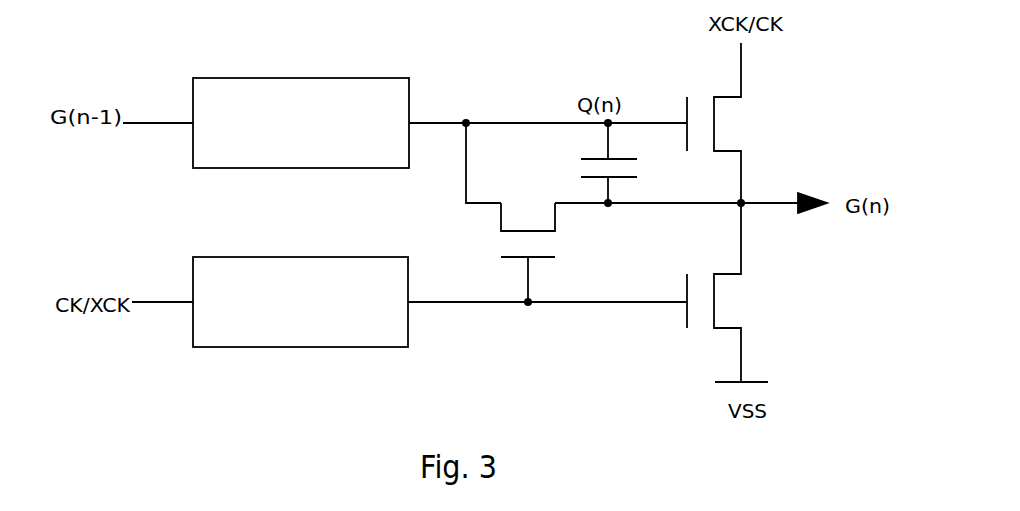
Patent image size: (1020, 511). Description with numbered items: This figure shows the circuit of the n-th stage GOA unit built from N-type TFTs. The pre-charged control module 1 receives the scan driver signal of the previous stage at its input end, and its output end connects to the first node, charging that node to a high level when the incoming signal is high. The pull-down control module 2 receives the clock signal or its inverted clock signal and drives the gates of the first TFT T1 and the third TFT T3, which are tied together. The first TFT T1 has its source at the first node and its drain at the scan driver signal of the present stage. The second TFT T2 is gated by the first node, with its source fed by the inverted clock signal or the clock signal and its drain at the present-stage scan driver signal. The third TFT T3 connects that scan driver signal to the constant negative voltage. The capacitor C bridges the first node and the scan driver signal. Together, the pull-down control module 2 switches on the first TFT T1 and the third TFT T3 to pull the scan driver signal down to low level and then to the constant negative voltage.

The pre-charged control module 1 is at (350, 78).
The pull-down control module 2 is at (349, 257).
The first TFT T1 is at (511, 252).
The second TFT T2 is at (729, 123).
The third TFT T3 is at (731, 292).
The capacitor C is at (598, 163).